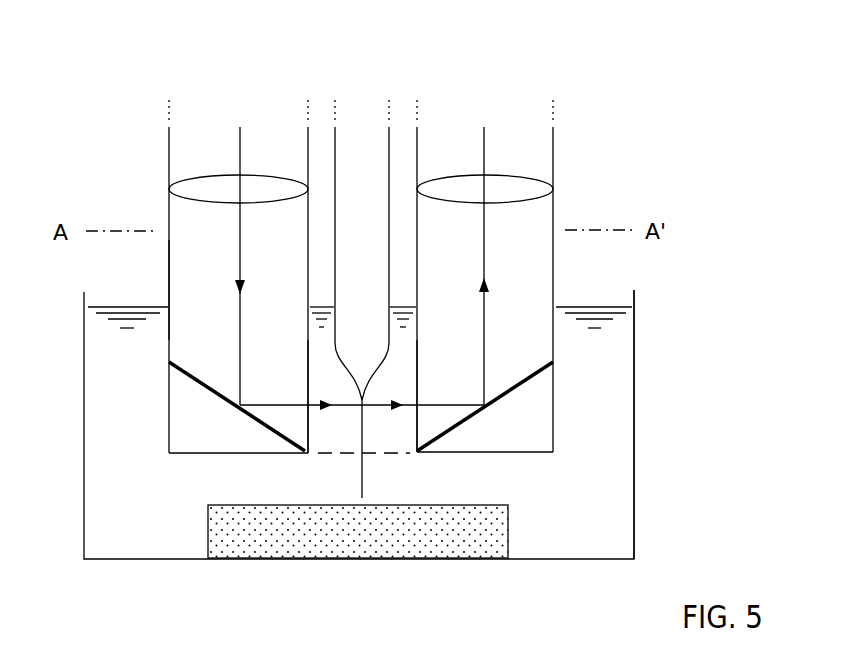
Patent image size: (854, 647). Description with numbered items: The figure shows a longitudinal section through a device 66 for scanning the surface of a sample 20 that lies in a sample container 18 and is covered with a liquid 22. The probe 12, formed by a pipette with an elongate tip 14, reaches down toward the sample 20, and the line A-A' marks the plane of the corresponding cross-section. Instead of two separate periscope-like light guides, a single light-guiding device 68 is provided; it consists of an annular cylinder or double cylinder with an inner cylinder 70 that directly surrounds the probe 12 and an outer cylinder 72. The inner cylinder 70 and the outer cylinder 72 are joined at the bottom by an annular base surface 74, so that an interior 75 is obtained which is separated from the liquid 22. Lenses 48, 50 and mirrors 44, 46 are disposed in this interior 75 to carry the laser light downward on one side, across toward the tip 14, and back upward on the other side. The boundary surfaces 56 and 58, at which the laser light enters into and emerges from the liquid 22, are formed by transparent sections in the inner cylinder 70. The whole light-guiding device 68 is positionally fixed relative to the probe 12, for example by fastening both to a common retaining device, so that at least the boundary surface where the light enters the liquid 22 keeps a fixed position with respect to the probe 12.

The probe 12 is at (389, 226).
The elongate tip 14 is at (362, 467).
The sample container 18 is at (635, 512).
The sample 20 is at (413, 560).
The liquid 22 is at (627, 425).
The mirror 44 is at (186, 368).
The mirror 46 is at (524, 372).
The lens 48 is at (205, 176).
The lens 50 is at (506, 175).
The boundary surface 56 is at (311, 380).
The boundary surface 58 is at (414, 380).
The device 66 is at (372, 84).
The light-guiding device 68 is at (566, 165).
The inner cylinder 70 is at (418, 143).
The outer cylinder 72 is at (169, 207).
The annular base surface 74 is at (193, 455).
The interior 75 is at (175, 282).